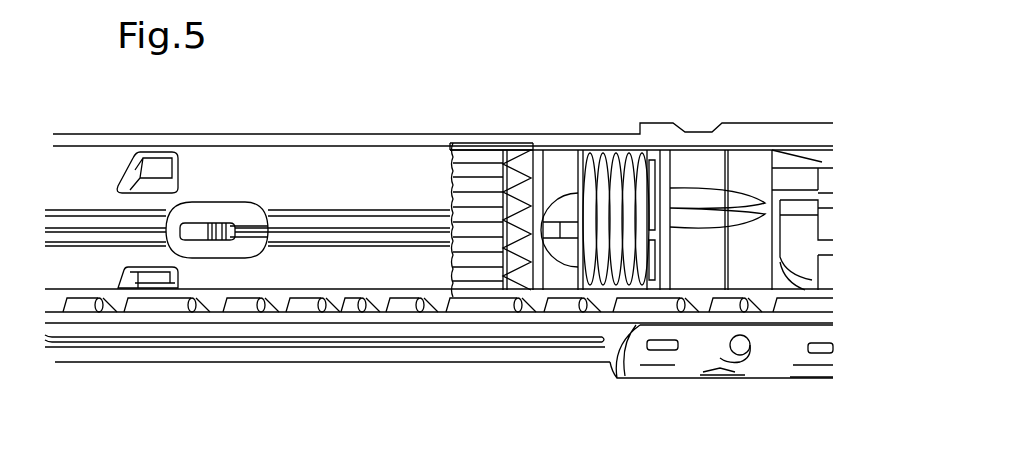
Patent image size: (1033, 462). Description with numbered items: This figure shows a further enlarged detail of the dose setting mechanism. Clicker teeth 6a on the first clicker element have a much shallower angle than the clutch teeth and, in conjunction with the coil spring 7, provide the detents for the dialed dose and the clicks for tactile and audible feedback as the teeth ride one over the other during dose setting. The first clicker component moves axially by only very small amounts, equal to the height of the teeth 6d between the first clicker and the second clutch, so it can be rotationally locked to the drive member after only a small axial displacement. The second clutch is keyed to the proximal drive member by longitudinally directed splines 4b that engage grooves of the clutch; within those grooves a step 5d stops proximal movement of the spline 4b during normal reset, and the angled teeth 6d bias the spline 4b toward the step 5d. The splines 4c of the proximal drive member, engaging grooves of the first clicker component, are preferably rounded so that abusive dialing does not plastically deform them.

The spline 4b is at (222, 222).
The spline 4c is at (557, 228).
The step 5d is at (207, 249).
The clicker teeth 6a is at (515, 207).
The teeth 6d is at (455, 207).
The coil spring 7 is at (643, 158).